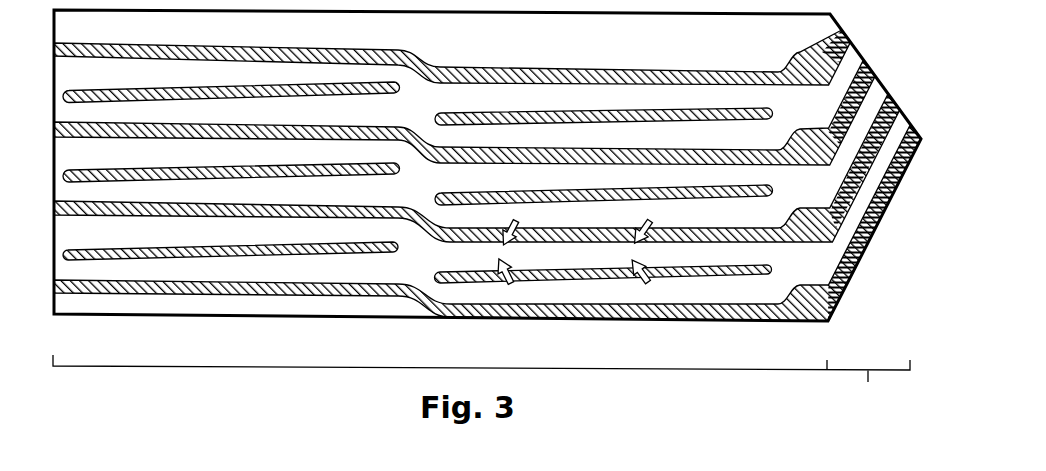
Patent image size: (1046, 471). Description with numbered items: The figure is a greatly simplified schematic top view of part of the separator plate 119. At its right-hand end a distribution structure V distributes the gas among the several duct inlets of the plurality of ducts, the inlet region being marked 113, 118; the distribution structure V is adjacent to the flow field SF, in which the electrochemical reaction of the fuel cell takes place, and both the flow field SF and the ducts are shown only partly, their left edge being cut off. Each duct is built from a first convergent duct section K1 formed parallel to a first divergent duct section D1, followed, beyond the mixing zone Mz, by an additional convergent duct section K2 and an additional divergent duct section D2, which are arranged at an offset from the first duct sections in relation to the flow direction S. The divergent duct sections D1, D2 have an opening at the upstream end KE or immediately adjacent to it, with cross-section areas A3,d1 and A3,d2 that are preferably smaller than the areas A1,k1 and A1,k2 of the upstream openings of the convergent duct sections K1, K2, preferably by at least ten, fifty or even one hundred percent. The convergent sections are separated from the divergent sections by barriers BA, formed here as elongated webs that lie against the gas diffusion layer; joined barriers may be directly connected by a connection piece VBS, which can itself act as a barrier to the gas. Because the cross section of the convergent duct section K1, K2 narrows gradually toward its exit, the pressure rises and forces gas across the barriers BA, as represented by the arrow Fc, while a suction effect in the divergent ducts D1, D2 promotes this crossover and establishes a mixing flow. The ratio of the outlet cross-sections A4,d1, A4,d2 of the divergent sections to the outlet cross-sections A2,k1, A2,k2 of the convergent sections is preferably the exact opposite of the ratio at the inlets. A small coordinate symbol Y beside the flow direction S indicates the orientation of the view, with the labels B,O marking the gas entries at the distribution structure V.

The separator plate 119 is at (747, 51).
The outlet opening (Eii) 113 is at (812, 188).
The outlet opening (Ei) 118 is at (811, 270).
The connection piece VBS is at (424, 62).
The inlet openings with flow arrows B,O is at (879, 169).
The additional divergent duct section D2 is at (95, 218).
The additional convergent duct section K2 is at (95, 262).
The mixing zone Mz is at (430, 275).
The first divergent duct section D1 is at (677, 254).
The first convergent duct section K1 is at (677, 295).
The upstream end KE is at (767, 303).
The arrow representing flow across the barriers Fc is at (513, 280).
The outlet cross-section of the additional divergent duct section A4,d2 is at (95, 221).
The outlet cross-section of the additional convergent duct section A2,k2 is at (105, 266).
The cross-section area of the upstream opening of the additional divergent duct sect A3,d2 is at (385, 229).
The cross-section area of the upstream opening of the additional convergent duct sec A1,k2 is at (385, 264).
The outlet cross-section of the first divergent duct section A4,d1 is at (453, 248).
The outlet cross-section of the first convergent duct section A2,k1 is at (448, 291).
The cross-section area of the upstream opening of the first divergent duct section A3,d1 is at (757, 255).
The cross-section area of the upstream opening of the first convergent duct section A1,k1 is at (765, 278).
The barrier BA is at (259, 256).
The flow field SF is at (657, 408).
The distribution structure V is at (868, 408).
The Y axis direction Y is at (810, 452).
The flow direction S is at (818, 443).